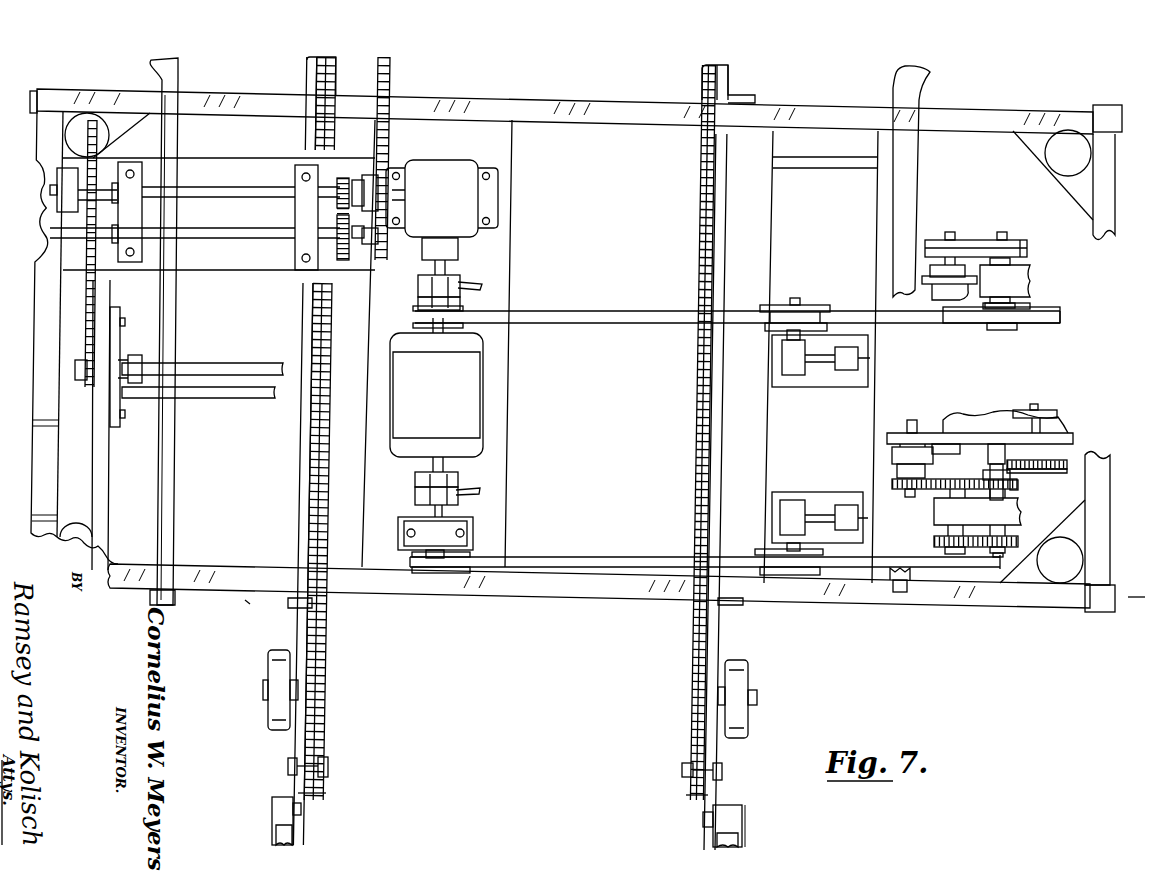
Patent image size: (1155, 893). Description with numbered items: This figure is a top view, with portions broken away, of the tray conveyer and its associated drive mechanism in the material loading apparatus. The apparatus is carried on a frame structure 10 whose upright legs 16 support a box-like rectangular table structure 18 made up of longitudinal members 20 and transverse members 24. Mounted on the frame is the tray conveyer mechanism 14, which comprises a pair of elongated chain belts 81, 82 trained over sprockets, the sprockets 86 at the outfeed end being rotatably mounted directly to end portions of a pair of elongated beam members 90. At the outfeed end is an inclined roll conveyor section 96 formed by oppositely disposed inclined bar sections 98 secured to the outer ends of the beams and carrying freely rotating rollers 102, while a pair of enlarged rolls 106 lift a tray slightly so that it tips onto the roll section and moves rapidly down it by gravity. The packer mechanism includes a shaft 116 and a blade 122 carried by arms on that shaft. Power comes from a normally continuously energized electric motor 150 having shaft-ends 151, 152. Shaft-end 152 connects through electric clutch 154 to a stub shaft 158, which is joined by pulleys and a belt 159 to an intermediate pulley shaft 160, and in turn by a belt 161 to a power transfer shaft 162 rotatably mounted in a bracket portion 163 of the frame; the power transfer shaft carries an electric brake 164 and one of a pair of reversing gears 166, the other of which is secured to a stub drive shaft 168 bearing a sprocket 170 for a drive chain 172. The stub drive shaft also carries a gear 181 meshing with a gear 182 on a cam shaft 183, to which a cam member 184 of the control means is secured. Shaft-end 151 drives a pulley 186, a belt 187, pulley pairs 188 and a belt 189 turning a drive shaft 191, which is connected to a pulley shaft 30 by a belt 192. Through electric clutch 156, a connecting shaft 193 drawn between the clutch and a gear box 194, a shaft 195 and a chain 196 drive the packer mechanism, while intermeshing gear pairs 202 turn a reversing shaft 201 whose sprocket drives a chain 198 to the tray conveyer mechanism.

The frame structure 10 is at (249, 603).
The tray conveyer mechanism 14 is at (666, 686).
The upright legs 16 is at (1136, 600).
The table structure 18 is at (806, 93).
The longitudinal members 20 is at (603, 99).
The transverse members 24 is at (34, 318).
The pulley shaft 30 is at (949, 240).
The chain belt 81 is at (317, 638).
The chain belt 82 is at (700, 642).
The sprockets 86 is at (300, 783).
The beam members 90 is at (296, 628).
The roll conveyor section 96 is at (760, 835).
The bar sections 98 is at (270, 808).
The rollers 102 is at (270, 830).
The enlarged rolls 106 is at (270, 724).
The shaft 116 is at (260, 364).
The blade 122 is at (246, 398).
The electric motor 150 is at (462, 411).
The power output shaft-end 151 is at (450, 330).
The power output shaft-end 152 is at (419, 472).
The electric clutch 154 is at (418, 492).
The electric clutch 156 is at (462, 284).
The stub shaft 158 is at (452, 516).
The belt 159 is at (614, 558).
The intermediate pulley shaft 160 is at (792, 490).
The belt 161 is at (814, 568).
The power transfer shaft 162 is at (952, 575).
The bracket portion 163 is at (1023, 508).
The electric brake 164 is at (967, 450).
The reversing gears 166 is at (934, 544).
The stub drive shaft 168 is at (1005, 552).
The sprocket 170 is at (1015, 483).
The drive chain 172 is at (928, 492).
The gear 181 is at (995, 470).
The gear 182 is at (1067, 455).
The cam shaft 183 is at (1036, 469).
The cam member 184 is at (1055, 415).
The pulley 186 is at (416, 320).
The belt 187 is at (620, 322).
The pulley pairs 188 is at (824, 304).
The belt 189 is at (903, 321).
The drive shaft 191 is at (1002, 240).
The belt 192 is at (974, 242).
The shaft 193 is at (433, 268).
The gear box 194 is at (473, 182).
The shaft 195 is at (232, 190).
The chain 196 is at (100, 284).
The chain 198 is at (392, 135).
The reversing shaft 201 is at (210, 242).
The gear pairs 202 is at (344, 258).